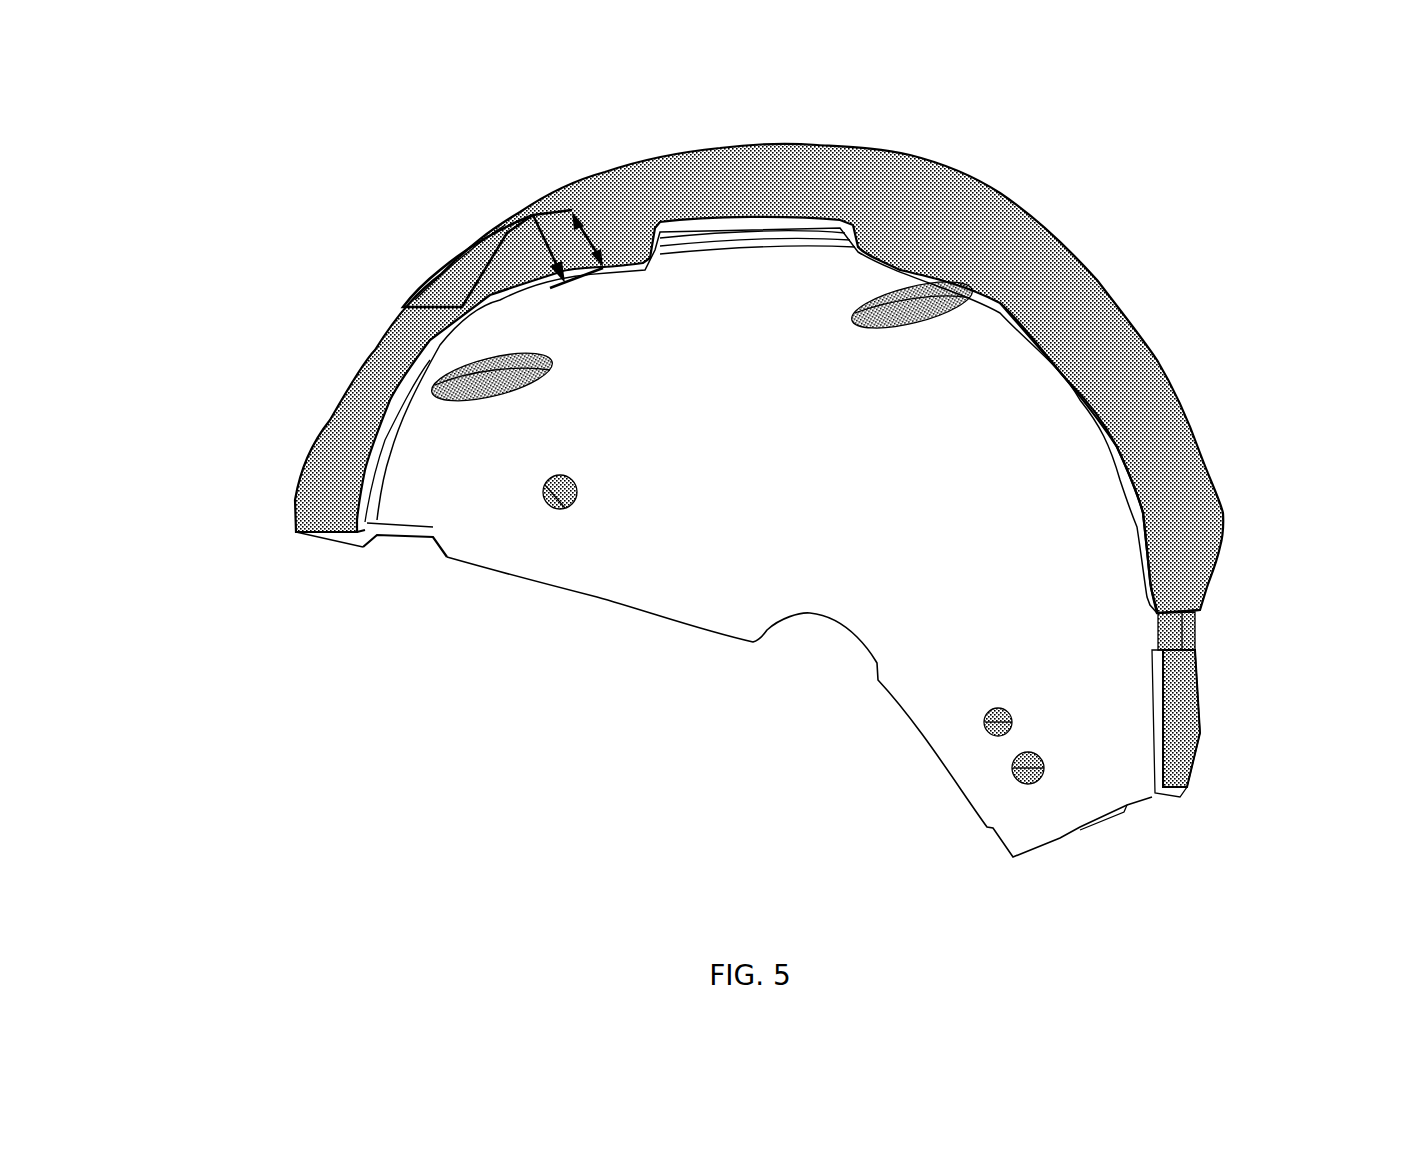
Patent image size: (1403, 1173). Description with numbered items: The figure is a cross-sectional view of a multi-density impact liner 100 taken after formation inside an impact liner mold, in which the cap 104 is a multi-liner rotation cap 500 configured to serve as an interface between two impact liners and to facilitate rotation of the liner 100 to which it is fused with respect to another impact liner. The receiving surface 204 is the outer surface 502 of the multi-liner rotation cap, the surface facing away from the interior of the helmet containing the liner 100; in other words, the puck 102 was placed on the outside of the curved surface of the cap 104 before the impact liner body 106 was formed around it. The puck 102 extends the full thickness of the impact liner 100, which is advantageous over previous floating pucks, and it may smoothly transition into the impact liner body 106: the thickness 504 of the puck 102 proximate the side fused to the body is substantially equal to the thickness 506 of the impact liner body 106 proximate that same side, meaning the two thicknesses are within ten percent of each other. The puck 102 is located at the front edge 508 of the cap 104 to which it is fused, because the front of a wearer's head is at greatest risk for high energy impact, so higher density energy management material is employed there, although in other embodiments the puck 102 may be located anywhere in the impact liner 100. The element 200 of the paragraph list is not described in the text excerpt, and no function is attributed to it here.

The multi-density impact liner 100 is at (1262, 172).
The puck 102 is at (395, 338).
The cap 104 is at (1157, 715).
The impact liner body 106 is at (1225, 532).
The front end portion of outer shell 200 is at (360, 467).
The receiving surface 204 is at (998, 303).
The multi-liner rotation cap 500 is at (710, 572).
The outer surface 502 is at (1132, 472).
The thickness of the puck 504 is at (503, 233).
The thickness of the impact liner body 506 is at (577, 227).
The front edge 508 is at (333, 543).